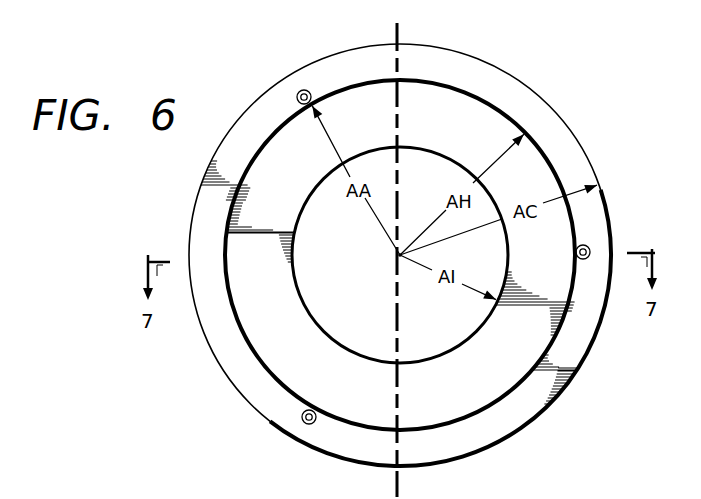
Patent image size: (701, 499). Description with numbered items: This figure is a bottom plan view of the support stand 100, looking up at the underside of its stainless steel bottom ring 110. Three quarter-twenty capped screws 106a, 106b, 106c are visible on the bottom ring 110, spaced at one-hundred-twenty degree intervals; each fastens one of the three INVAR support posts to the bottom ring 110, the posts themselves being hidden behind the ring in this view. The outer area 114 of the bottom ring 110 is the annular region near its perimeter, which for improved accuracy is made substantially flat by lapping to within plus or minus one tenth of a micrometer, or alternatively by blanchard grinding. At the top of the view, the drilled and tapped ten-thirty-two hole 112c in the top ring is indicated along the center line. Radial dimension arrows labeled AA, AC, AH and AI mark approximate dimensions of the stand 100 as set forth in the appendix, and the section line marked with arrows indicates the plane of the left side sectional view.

The support stand 100 is at (158, 382).
The capped screw 106a is at (589, 246).
The capped screw 106b is at (298, 91).
The capped screw 106c is at (305, 424).
The bottom ring 110 is at (463, 130).
The drilled and tapped hole 112c is at (366, 248).
The outer area 114 is at (487, 73).